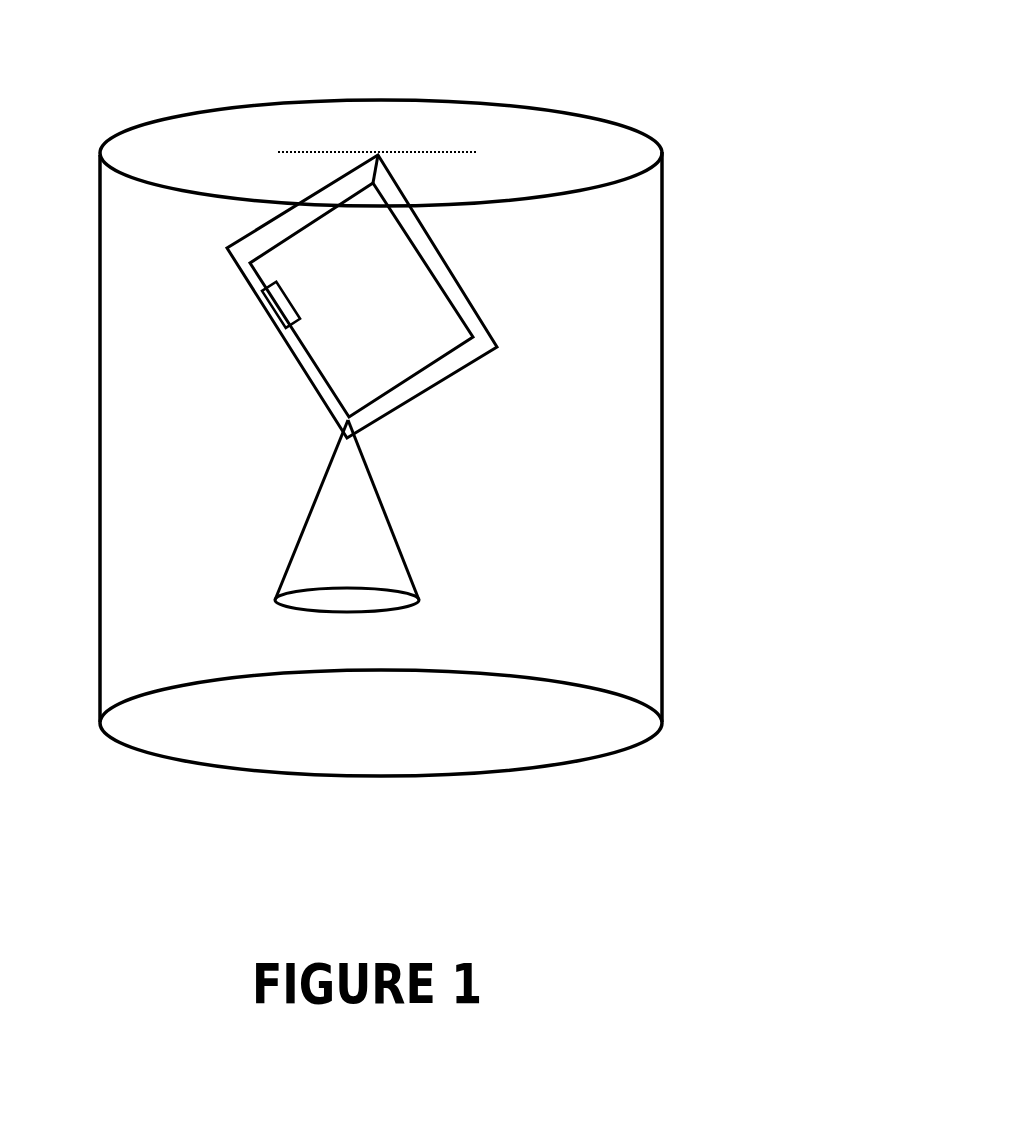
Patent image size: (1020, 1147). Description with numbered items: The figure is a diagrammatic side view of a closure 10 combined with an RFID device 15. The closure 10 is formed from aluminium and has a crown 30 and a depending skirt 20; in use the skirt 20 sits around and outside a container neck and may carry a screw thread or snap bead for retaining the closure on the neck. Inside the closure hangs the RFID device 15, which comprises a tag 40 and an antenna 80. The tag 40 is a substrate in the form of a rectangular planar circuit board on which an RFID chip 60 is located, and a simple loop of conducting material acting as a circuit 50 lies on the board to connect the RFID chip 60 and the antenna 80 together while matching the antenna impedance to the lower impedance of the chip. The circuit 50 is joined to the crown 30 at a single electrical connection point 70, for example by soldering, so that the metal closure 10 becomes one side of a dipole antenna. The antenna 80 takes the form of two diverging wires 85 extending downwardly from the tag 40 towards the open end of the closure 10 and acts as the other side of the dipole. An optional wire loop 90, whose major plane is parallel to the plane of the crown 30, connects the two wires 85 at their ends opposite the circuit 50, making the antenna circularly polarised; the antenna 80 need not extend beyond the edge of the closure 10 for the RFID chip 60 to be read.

The closure 10 is at (496, 415).
The RFID device 15 is at (523, 411).
The skirt 20 is at (660, 437).
The crown 30 is at (597, 145).
The tag 40 is at (270, 263).
The circuit 50 is at (310, 353).
The RFID chip 60 is at (275, 305).
The single electrical connection point 70 is at (378, 155).
The antenna 80 is at (354, 591).
The diverging wires 85 is at (402, 552).
The loop 90 is at (348, 613).